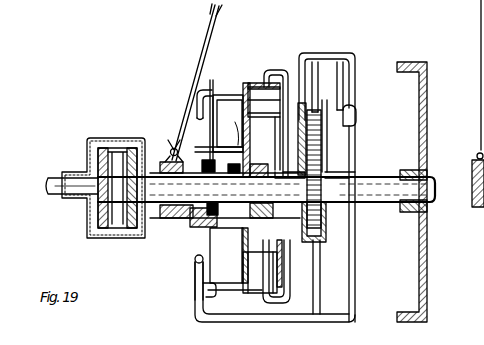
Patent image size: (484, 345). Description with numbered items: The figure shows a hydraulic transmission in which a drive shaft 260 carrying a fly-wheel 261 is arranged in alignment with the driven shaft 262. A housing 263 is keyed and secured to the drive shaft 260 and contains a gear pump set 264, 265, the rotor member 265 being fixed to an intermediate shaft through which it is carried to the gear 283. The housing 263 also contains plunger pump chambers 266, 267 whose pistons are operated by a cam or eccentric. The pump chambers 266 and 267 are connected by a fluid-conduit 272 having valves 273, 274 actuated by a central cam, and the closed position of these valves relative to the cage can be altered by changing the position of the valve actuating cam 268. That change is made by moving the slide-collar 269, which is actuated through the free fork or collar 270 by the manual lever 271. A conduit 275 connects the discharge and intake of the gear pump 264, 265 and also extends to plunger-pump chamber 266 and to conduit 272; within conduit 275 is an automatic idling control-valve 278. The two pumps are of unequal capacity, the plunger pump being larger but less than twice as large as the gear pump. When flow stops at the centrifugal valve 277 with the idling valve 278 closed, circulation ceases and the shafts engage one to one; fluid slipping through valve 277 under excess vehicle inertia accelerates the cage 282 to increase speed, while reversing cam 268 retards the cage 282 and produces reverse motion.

The drive shaft 260 is at (433, 179).
The fly-wheel 261 is at (427, 135).
The driven shaft 262 is at (48, 180).
The housing 263 is at (327, 232).
The gear pump set member 264 is at (324, 112).
The rotor member 265 is at (326, 206).
The plunger pump chamber 266 is at (268, 87).
The plunger pump chamber 267 is at (258, 280).
The valve actuating cam 268 is at (206, 160).
The slide-collar 269 is at (232, 247).
The free fork or collar 270 is at (171, 150).
The manual lever 271 is at (184, 58).
The fluid-conduit 272 is at (195, 272).
The valve 273 is at (210, 286).
The valve 274 is at (211, 80).
The conduit 275 is at (357, 276).
The centrifugal valve 277 is at (298, 66).
The automatic idling control-valve 278 is at (352, 56).
The cage 282 is at (115, 138).
The gear 283 is at (120, 226).